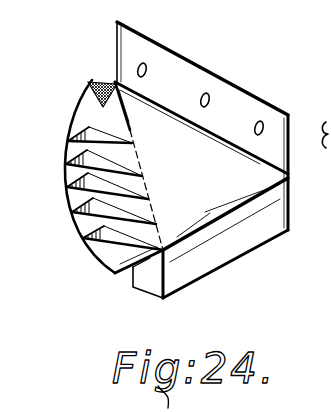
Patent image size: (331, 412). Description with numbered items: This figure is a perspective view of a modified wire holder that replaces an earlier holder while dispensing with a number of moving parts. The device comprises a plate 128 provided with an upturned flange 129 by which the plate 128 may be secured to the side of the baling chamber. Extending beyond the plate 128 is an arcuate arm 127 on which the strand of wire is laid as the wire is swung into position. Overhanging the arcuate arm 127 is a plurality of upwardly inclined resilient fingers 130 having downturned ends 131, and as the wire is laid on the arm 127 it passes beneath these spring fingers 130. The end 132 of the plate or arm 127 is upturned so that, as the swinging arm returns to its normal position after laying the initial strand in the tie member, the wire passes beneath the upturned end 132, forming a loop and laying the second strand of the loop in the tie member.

The arcuate arm 127 is at (114, 278).
The plate 128 is at (240, 184).
The upturned flange 129 is at (248, 92).
The resilient fingers 130 is at (128, 243).
The downturned ends 131 is at (100, 234).
The upturned end 132 is at (94, 83).